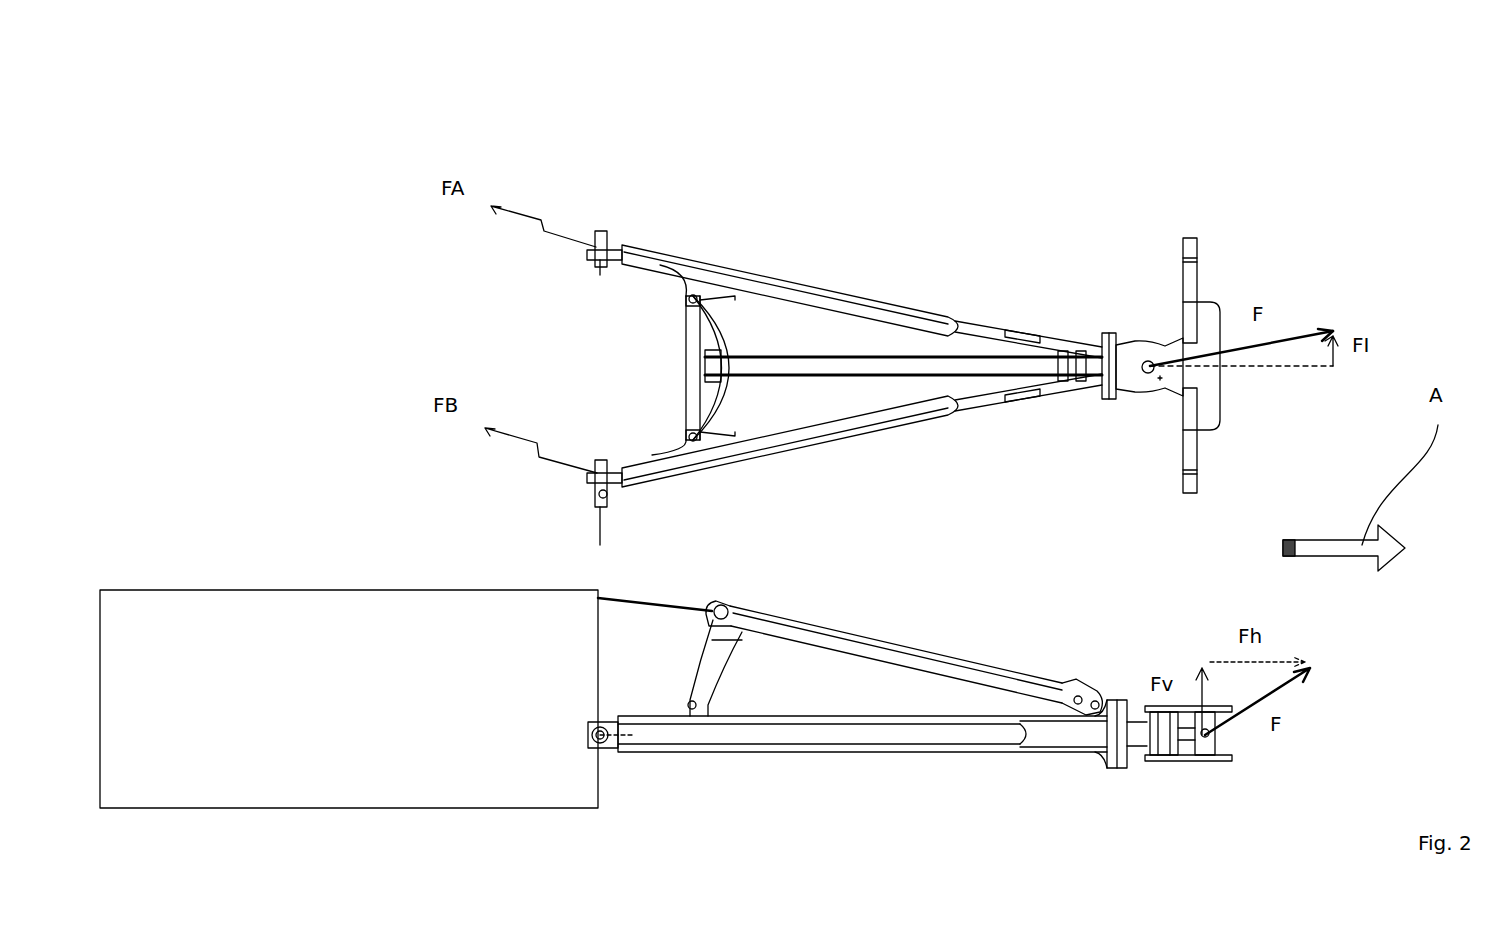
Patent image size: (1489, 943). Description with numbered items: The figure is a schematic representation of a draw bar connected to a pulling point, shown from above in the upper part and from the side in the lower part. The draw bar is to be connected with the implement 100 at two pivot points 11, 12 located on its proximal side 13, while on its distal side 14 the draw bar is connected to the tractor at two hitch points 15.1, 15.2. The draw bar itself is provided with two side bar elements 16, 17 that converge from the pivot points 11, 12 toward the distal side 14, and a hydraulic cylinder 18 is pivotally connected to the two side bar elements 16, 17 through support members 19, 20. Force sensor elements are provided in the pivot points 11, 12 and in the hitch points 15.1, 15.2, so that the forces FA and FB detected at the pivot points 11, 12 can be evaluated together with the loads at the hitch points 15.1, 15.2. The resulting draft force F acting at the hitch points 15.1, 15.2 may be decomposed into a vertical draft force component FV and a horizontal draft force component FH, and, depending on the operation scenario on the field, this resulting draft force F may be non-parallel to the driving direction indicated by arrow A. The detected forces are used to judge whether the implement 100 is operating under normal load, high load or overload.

The pivot point 11 is at (600, 240).
The pivot point 12 is at (598, 470).
The proximal side 13 is at (598, 318).
The distal side 14 is at (1044, 340).
The hitch point 15.1 is at (1190, 236).
The hitch point 15.2 is at (1190, 495).
The side bar element 16 is at (861, 425).
The side bar element 17 is at (803, 292).
The hydraulic cylinder 18 is at (882, 652).
The support member 19 is at (707, 300).
The support member 20 is at (720, 438).
The implement 100 is at (258, 612).